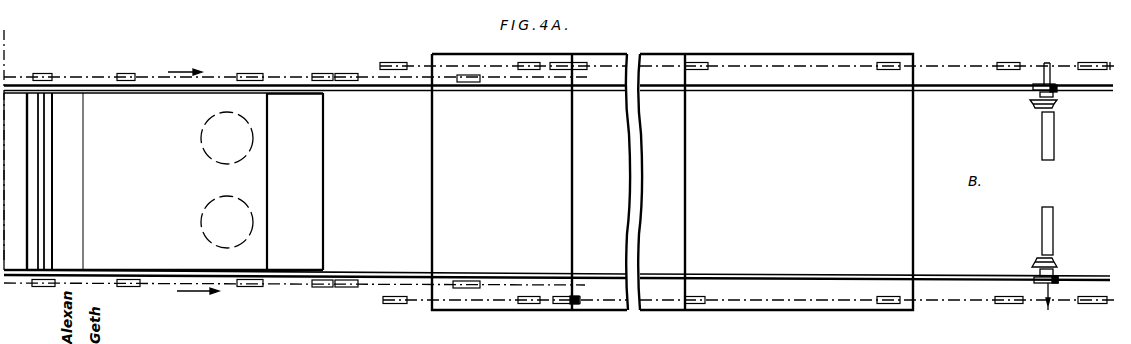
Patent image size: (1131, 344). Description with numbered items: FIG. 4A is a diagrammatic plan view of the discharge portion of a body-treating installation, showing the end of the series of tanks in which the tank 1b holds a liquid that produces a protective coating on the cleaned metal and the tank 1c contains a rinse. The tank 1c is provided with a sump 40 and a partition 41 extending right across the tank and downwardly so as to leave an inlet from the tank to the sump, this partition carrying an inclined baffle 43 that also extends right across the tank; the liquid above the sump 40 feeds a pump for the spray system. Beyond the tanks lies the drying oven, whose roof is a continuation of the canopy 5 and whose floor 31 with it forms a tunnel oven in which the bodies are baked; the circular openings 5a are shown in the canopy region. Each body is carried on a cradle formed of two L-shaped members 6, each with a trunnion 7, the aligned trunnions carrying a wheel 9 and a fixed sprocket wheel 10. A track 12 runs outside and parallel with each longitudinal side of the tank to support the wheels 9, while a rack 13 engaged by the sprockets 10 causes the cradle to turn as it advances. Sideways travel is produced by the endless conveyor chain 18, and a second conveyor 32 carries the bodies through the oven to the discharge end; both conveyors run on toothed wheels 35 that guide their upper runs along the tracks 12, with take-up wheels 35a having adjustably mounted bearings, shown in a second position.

The tank 1b is at (14, 252).
The tank 1c is at (141, 250).
The canopy 5 is at (817, 54).
The circular openings 5a is at (220, 213).
The L-shaped member 6 is at (1053, 151).
The trunnion 7 is at (1052, 82).
The wheel 9 is at (1058, 97).
The sprocket wheel 10 is at (1058, 86).
The track 12 is at (960, 91).
The rack 13 is at (950, 85).
The conveyor chain 18 is at (362, 75).
The floor 31 is at (580, 173).
The second conveyor 32 is at (415, 62).
The toothed wheel 35 is at (1030, 64).
The take-up wheel 35a is at (342, 290).
The sump 40 is at (50, 105).
The partition 41 is at (55, 130).
The inclined baffle 43 is at (78, 176).